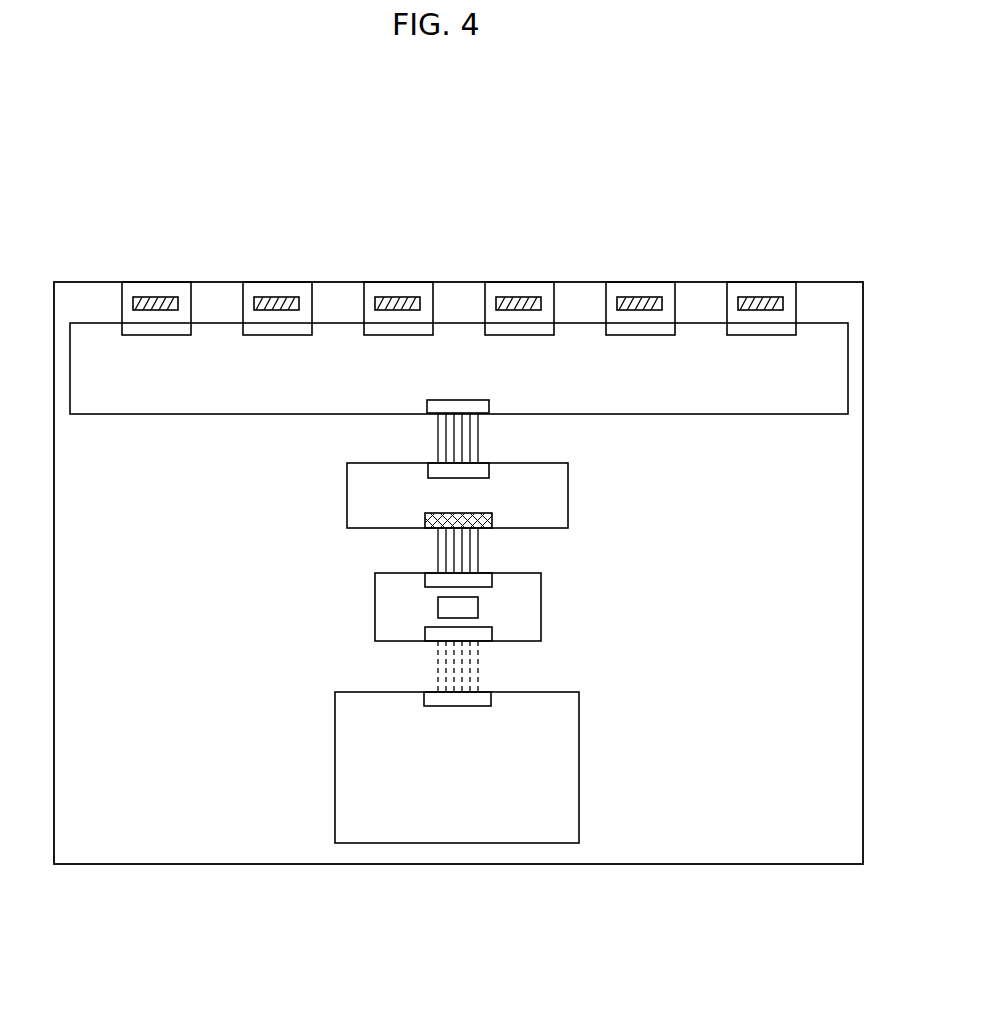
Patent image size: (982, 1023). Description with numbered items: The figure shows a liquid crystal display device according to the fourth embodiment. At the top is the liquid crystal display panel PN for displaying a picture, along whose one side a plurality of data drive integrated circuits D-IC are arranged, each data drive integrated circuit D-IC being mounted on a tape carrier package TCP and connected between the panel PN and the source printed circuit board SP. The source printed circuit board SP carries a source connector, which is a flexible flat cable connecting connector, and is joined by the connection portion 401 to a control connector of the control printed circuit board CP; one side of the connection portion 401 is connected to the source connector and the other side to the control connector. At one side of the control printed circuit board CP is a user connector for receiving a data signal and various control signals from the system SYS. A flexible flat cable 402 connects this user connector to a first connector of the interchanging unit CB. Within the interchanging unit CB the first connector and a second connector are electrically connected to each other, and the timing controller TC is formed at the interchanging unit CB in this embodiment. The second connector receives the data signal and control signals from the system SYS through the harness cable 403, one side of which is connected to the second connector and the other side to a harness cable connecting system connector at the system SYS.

The liquid crystal display panel PN is at (833, 282).
The source printed circuit board SP is at (802, 414).
The tape carrier package TCP is at (121, 294).
The data drive integrated circuit D-IC is at (155, 297).
The connection portion 401 is at (478, 438).
The control printed circuit board CP is at (568, 495).
The flexible flat cable 402 is at (482, 553).
The interchanging unit CB is at (541, 577).
The timing controller TC is at (478, 607).
The harness cable 403 is at (482, 668).
The system SYS is at (579, 766).